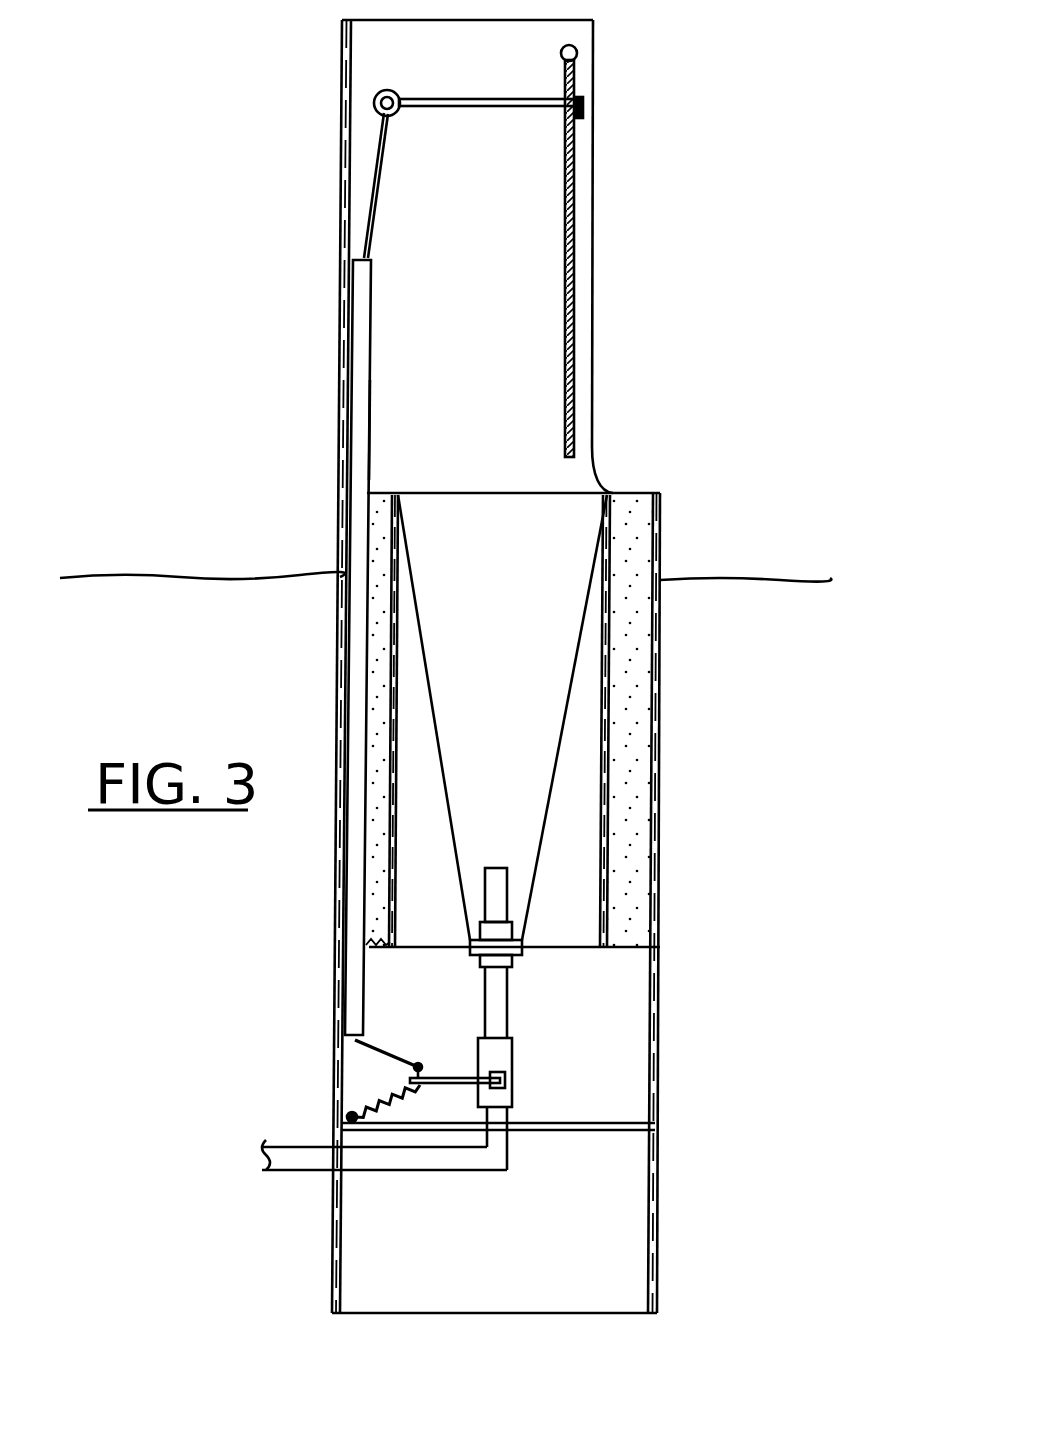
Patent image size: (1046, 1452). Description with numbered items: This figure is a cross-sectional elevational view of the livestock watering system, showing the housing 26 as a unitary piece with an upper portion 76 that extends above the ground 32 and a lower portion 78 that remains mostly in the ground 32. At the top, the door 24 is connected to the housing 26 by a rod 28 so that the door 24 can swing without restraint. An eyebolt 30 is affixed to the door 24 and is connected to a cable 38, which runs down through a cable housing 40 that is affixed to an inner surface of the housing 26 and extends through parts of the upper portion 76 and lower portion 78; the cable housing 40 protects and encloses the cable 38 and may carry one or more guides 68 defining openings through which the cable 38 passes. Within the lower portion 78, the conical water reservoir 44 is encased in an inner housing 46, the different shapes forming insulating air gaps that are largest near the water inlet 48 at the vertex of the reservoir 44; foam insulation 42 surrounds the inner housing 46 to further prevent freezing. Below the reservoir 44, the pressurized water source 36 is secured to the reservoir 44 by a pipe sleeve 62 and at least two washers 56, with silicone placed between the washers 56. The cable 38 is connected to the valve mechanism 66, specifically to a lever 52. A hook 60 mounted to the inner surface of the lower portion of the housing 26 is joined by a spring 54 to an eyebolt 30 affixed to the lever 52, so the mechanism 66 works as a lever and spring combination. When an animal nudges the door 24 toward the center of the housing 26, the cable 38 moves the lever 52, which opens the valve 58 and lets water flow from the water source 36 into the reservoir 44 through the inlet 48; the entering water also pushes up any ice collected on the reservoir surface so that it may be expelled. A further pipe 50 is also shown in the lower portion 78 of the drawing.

The door 24 is at (576, 298).
The housing 26 is at (370, 48).
The rod 28 is at (577, 53).
The eyebolt 30 is at (440, 98).
The ground 32 is at (222, 560).
The pressurized water source 36 is at (503, 1012).
The cable 38 is at (373, 182).
The cable housing 40 is at (360, 355).
The foam insulation 42 is at (633, 634).
The water reservoir 44 is at (552, 590).
The inner housing 46 is at (570, 920).
The inlet 48 is at (493, 868).
The pipe 50 is at (600, 1125).
The lever 52 is at (447, 1077).
The spring 54 is at (387, 1093).
The washers 56 is at (520, 941).
The valve 58 is at (502, 1063).
The hook 60 is at (350, 1108).
The pipe sleeve 62 is at (512, 965).
The valve mechanism 66 is at (196, 1018).
The guide 68 is at (369, 393).
The upper portion 76 is at (644, 168).
The lower portion 78 is at (738, 921).